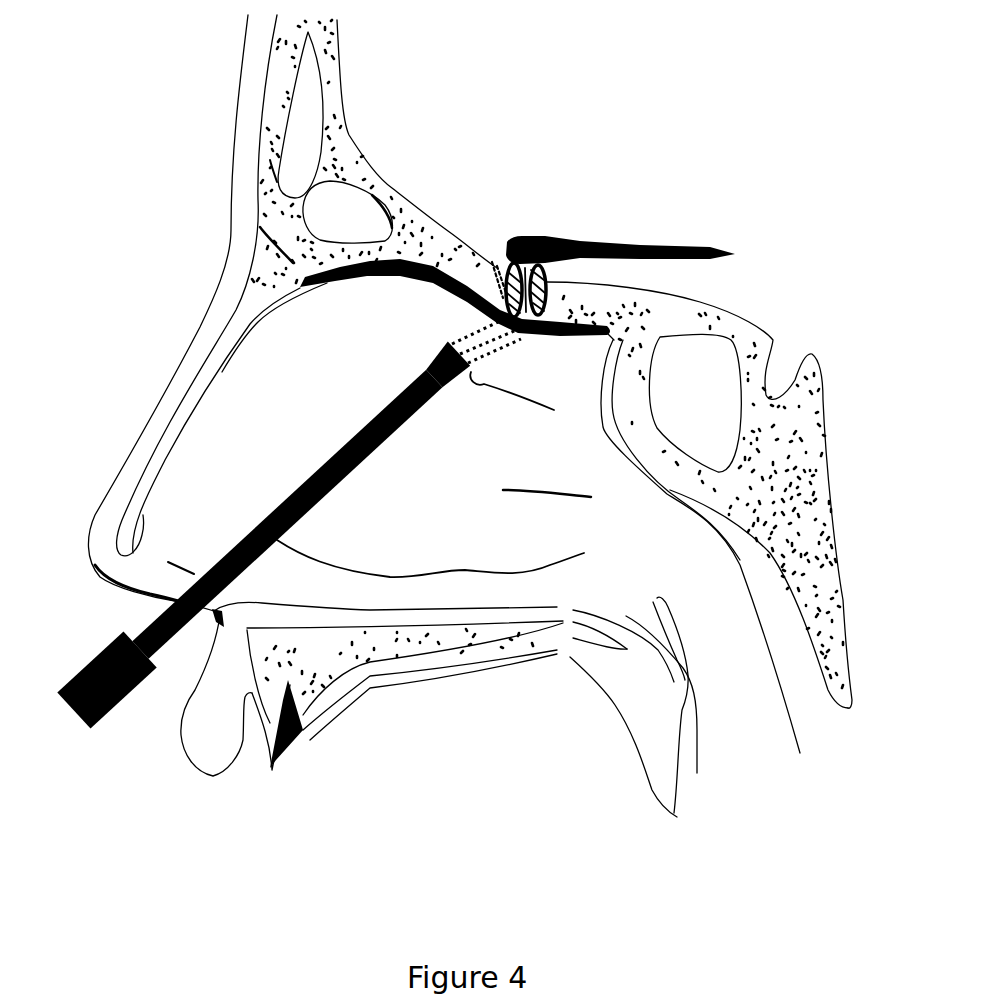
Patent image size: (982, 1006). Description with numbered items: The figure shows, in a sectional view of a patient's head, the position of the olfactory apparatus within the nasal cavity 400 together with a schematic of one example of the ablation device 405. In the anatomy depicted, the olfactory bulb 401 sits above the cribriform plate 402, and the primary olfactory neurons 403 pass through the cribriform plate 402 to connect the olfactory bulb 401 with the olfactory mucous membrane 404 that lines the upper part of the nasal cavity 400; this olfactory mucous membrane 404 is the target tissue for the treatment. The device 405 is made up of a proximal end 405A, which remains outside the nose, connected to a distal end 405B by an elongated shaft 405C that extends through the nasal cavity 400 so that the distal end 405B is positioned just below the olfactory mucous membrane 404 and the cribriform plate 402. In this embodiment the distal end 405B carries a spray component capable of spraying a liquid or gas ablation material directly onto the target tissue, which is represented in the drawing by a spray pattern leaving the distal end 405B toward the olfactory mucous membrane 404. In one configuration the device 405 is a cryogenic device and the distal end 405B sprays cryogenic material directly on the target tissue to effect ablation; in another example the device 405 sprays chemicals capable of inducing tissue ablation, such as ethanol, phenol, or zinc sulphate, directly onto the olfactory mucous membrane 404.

The nasal cavity 400 is at (410, 483).
The olfactory bulb 401 is at (540, 240).
The cribriform plate 402 is at (493, 287).
The primary olfactory neurons 403 is at (547, 290).
The olfactory mucous membrane 404 is at (530, 333).
The device 405 is at (267, 521).
The proximal end 405A is at (90, 660).
The distal end 405B is at (437, 353).
The elongated shaft 405C is at (360, 432).